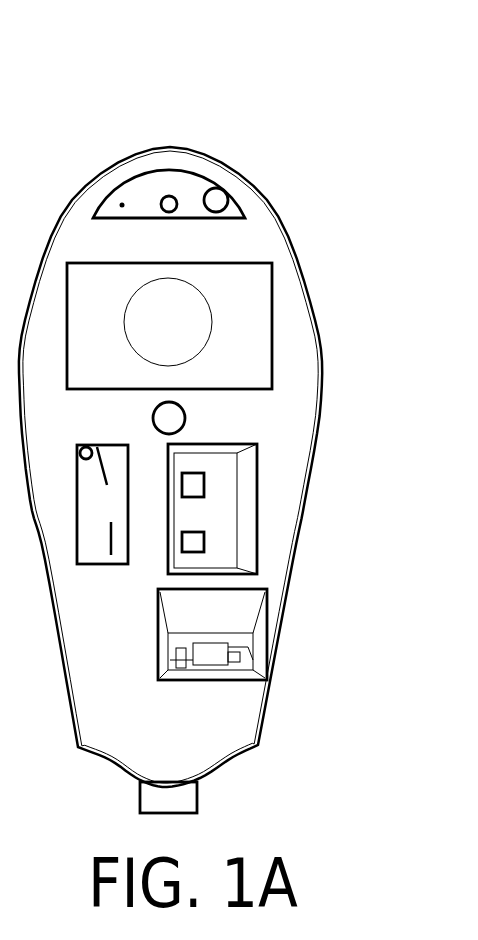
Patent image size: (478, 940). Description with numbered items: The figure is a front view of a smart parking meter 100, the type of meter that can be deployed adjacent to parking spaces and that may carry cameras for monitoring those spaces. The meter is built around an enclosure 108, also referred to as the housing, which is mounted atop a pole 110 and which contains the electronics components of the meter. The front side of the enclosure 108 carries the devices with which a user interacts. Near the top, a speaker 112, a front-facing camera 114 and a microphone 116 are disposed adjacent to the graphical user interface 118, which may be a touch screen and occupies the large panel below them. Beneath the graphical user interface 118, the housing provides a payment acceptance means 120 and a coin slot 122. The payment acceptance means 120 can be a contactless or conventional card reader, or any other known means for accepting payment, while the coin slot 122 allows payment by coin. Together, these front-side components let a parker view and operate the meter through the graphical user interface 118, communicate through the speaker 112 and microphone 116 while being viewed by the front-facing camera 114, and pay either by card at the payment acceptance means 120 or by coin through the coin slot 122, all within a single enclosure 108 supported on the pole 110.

The smart parking meter 100 is at (182, 108).
The enclosure 108 is at (222, 712).
The pole 110 is at (183, 798).
The speaker 112 is at (222, 200).
The front-facing camera 114 is at (172, 208).
The microphone 116 is at (122, 205).
The graphical user interface 118 is at (247, 346).
The payment acceptance means 120 is at (213, 507).
The coin slot 122 is at (98, 472).